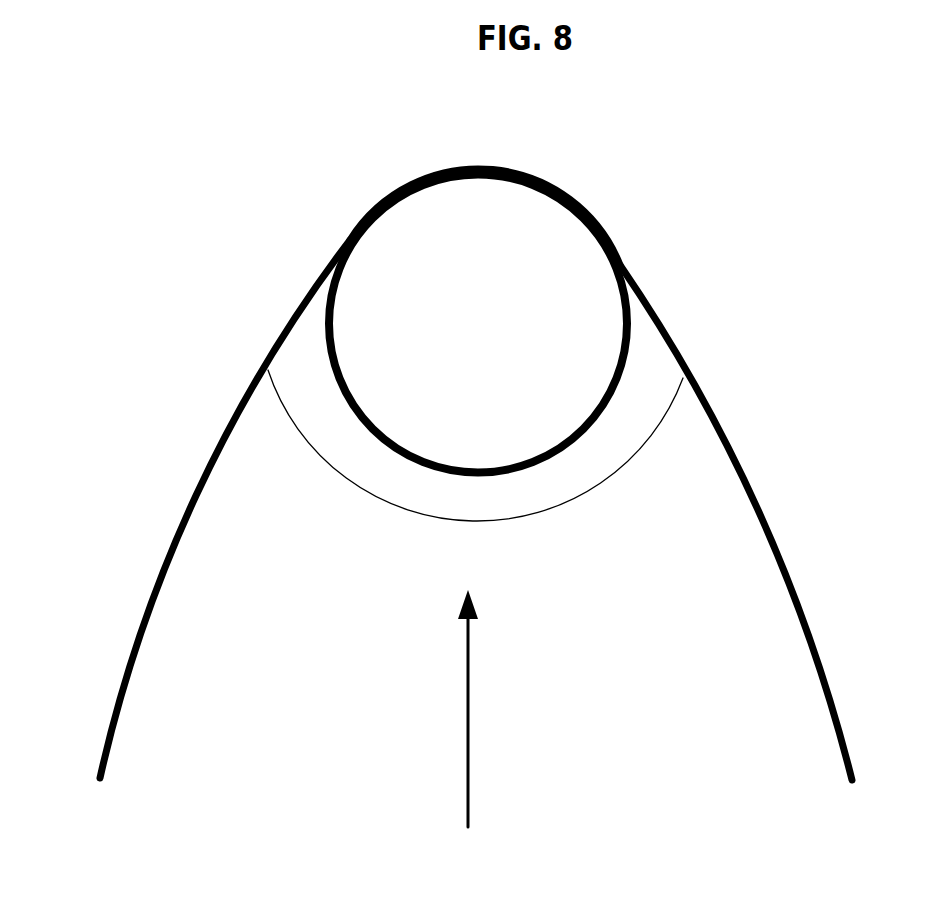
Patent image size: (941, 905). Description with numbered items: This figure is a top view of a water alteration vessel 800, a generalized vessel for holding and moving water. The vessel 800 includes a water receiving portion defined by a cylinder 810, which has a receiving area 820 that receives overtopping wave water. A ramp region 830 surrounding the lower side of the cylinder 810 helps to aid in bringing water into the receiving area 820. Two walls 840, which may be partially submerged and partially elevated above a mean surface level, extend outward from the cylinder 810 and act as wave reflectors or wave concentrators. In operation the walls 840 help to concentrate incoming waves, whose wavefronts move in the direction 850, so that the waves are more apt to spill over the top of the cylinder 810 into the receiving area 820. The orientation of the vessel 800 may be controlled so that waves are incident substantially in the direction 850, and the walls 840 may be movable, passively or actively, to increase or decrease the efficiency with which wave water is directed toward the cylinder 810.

The water alteration vessel 800 is at (668, 784).
The cylinder 810 is at (632, 295).
The receiving area 820 is at (508, 340).
The ramp region 830 is at (610, 455).
The walls 840 is at (183, 527).
The direction 850 is at (468, 663).